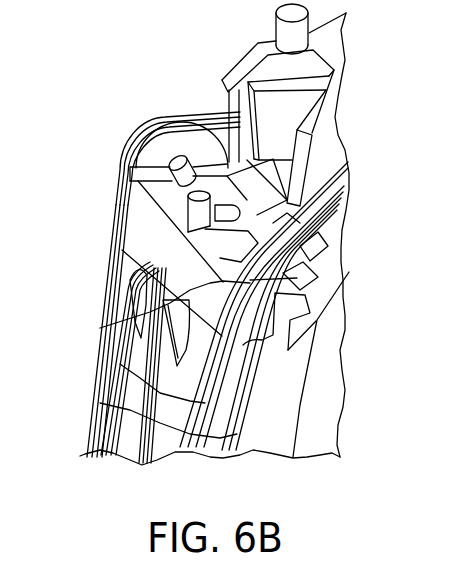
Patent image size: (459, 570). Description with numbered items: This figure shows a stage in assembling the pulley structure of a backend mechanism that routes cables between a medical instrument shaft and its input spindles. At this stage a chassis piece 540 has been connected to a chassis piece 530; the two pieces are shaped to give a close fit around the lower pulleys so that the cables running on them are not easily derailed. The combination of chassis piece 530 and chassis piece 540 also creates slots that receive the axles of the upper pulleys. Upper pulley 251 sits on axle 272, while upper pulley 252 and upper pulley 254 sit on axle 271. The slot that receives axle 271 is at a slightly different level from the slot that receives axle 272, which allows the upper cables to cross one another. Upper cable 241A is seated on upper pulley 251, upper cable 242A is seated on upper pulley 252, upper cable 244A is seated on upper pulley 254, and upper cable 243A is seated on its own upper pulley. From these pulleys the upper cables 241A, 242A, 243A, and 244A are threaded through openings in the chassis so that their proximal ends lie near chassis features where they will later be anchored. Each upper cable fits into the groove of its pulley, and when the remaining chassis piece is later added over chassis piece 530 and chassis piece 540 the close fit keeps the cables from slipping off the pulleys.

The upper pulley 252 is at (148, 155).
The upper pulley 254 is at (146, 161).
The axle 271 is at (158, 199).
The upper cable 242A is at (110, 261).
The upper cable 244A is at (88, 358).
The axle 272 is at (100, 328).
The upper cable 243A is at (116, 365).
The upper cable 241A is at (100, 403).
The chassis piece 540 is at (185, 264).
The upper pulley 251 is at (273, 336).
The chassis piece 530 is at (318, 364).